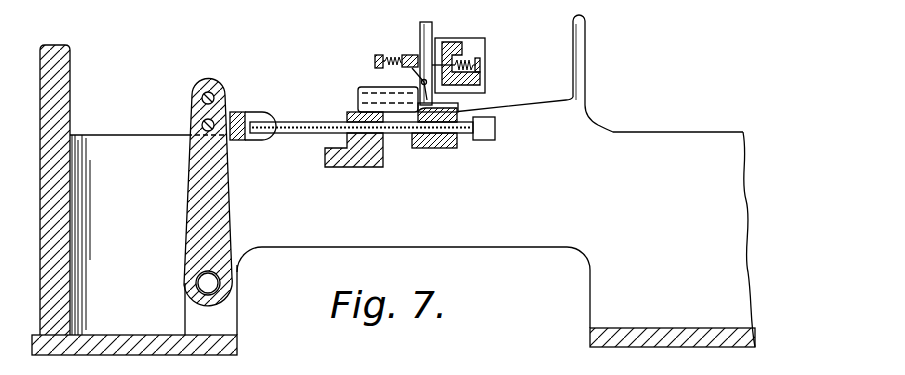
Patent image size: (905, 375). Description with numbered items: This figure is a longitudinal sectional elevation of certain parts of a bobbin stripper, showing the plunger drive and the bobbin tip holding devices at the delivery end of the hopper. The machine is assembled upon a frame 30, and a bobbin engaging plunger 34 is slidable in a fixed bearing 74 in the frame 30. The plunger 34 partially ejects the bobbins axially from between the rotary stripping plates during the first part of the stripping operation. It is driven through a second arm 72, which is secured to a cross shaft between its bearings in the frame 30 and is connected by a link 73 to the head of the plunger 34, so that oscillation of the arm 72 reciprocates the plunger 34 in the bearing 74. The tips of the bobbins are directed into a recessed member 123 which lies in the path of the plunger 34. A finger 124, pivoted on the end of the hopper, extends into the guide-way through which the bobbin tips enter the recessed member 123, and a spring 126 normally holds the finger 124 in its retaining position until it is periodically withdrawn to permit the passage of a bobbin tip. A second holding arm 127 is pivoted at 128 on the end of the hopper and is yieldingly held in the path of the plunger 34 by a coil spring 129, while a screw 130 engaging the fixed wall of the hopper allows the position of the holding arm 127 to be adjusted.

The frame 30 is at (501, 247).
The plunger 34 is at (467, 135).
The second arm 72 is at (236, 192).
The link 73 is at (239, 112).
The fixed bearing 74 is at (362, 168).
The recessed member 123 is at (433, 148).
The finger 124 is at (487, 85).
The spring 126 is at (470, 60).
The second holding arm 127 is at (458, 104).
The pivot 128 is at (408, 55).
The coil spring 129 is at (379, 55).
The screw 130 is at (421, 82).